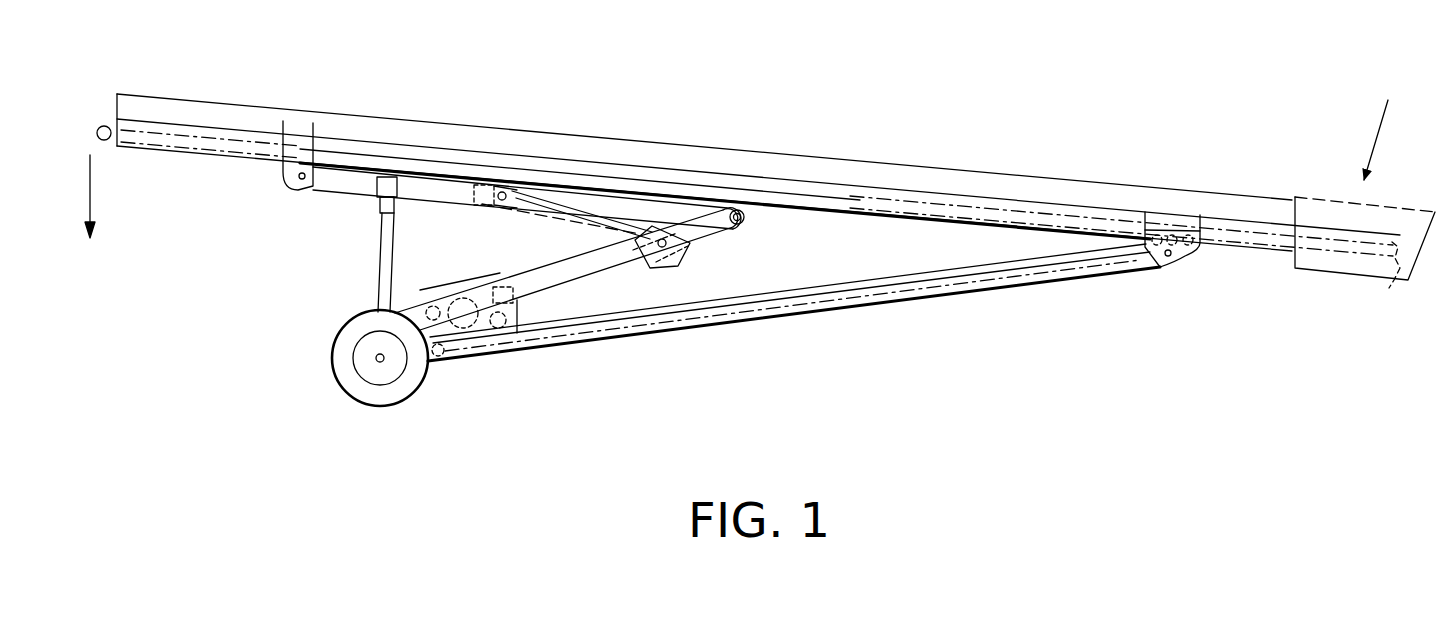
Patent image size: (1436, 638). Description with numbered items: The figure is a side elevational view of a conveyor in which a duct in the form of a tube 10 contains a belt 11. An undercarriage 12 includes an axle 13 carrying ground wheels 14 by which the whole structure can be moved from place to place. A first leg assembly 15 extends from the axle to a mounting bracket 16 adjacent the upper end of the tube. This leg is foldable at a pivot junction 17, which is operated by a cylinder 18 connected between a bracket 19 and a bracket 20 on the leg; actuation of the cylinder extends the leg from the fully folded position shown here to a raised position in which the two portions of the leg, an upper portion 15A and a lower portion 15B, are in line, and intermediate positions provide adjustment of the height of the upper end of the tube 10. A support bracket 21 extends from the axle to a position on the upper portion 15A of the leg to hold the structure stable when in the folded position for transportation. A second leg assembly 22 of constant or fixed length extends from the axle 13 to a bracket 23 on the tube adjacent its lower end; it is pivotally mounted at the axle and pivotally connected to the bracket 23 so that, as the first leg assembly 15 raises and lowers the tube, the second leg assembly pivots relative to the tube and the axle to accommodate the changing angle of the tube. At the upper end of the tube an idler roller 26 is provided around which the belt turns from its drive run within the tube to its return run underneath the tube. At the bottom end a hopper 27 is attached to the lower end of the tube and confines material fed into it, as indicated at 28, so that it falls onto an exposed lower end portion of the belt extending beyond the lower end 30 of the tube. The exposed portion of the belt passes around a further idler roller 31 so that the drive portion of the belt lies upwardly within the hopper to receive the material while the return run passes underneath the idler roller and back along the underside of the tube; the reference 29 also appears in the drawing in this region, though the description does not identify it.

The tube 10 is at (674, 143).
The belt 11 is at (107, 122).
The undercarriage 12 is at (316, 283).
The axle 13 is at (370, 352).
The ground wheels 14 is at (350, 387).
The first leg assembly 15 is at (724, 253).
The upper portion of the leg 15A is at (435, 185).
The lower portion of the leg 15B is at (540, 282).
The mounting bracket 16 is at (304, 158).
The pivot junction 17 is at (748, 216).
The cylinder 18 is at (575, 226).
The bracket 19 is at (477, 202).
The bracket 20 is at (667, 270).
The support bracket 21 is at (374, 223).
The second leg assembly 22 is at (905, 306).
The bracket 23 is at (1162, 225).
The idler roller 26 is at (105, 140).
The hopper 27 is at (1338, 178).
The material 28 is at (1373, 118).
The belt return 29 is at (1326, 221).
The lower end of the tube 30 is at (1289, 210).
The idler roller 31 is at (1397, 262).